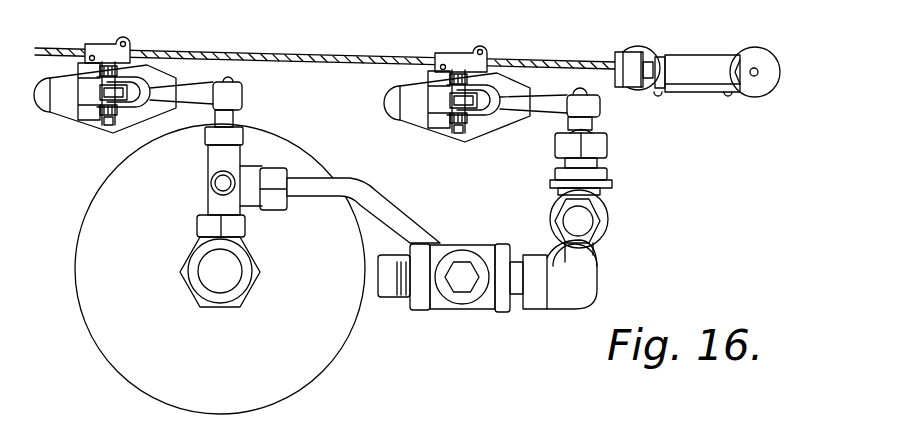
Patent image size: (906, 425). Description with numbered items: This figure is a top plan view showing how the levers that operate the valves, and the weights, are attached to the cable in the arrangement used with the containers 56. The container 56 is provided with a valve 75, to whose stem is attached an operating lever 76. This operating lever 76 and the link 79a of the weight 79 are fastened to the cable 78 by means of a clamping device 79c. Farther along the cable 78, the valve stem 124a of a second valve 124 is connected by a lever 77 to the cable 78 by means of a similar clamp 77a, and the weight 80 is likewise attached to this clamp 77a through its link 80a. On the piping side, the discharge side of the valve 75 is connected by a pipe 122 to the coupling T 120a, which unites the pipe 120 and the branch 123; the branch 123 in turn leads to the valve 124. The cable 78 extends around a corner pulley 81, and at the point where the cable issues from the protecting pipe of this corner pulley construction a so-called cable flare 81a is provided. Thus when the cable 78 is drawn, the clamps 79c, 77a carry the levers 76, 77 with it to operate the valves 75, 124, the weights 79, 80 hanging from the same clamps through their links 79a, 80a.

The container 56 is at (305, 376).
The valve 75 is at (192, 284).
The operating lever 76 is at (193, 97).
The lever 77 is at (525, 107).
The clamp 77a is at (457, 62).
The cable 78 is at (322, 60).
The weight 79 is at (58, 108).
The link 79a is at (90, 93).
The clamping device 79c is at (127, 53).
The weight 80 is at (413, 115).
The link 80a is at (443, 120).
The corner pulley 81 is at (700, 78).
The cable flare 81a is at (757, 90).
The pipe 120 is at (395, 302).
The coupling T 120a is at (487, 302).
The pipe 122 is at (397, 208).
The branch 123 is at (582, 233).
The valve 124 is at (600, 207).
The valve stem 124a is at (588, 128).